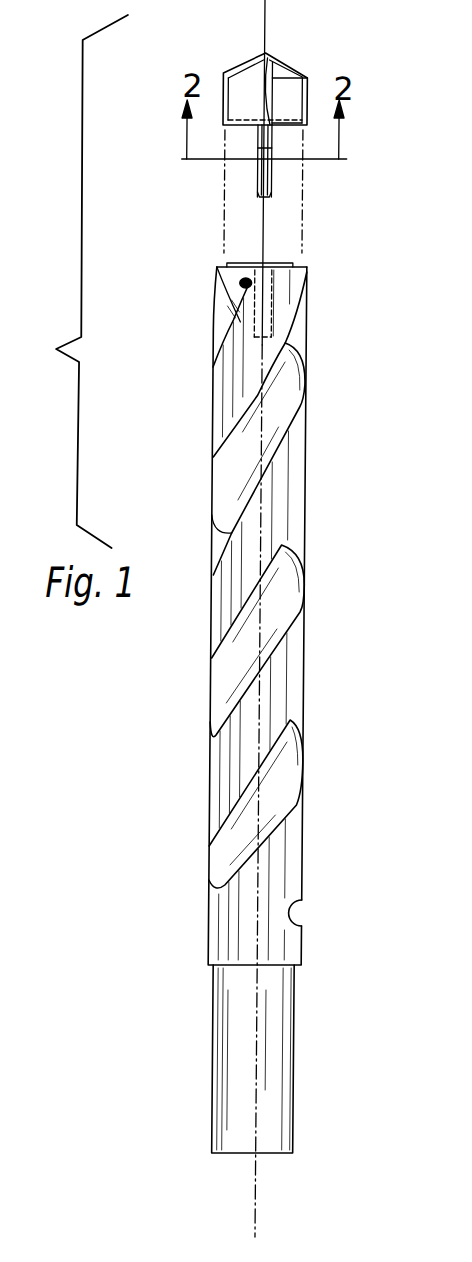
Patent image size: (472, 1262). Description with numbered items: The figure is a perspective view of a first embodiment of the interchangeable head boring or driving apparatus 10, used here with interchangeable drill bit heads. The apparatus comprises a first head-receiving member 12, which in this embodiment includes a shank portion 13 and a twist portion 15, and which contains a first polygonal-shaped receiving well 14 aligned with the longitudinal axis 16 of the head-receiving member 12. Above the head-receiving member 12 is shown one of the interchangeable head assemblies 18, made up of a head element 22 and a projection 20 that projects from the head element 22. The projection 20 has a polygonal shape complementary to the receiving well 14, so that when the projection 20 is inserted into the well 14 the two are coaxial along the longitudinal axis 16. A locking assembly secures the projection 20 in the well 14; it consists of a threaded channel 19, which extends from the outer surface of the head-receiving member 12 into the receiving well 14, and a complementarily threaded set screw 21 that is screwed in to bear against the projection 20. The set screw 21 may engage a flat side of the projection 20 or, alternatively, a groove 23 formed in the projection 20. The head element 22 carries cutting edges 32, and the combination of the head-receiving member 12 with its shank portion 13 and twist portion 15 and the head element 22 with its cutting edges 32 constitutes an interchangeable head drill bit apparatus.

The interchangeable head boring or driving apparatus 10 is at (79, 281).
The head-receiving member 12 is at (329, 560).
The shank portion 13 is at (292, 1040).
The first polygonal-shaped receiving well 14 is at (268, 265).
The twist portion 15 is at (296, 455).
The longitudinal axis 16 is at (265, 10).
The interchangeable head assembly 18 is at (323, 101).
The threaded channel 19 is at (267, 265).
The projection 20 is at (259, 167).
The set screw 21 is at (249, 283).
The head element 22 is at (222, 74).
The groove 23 is at (276, 147).
The cutting edges 32 is at (268, 55).